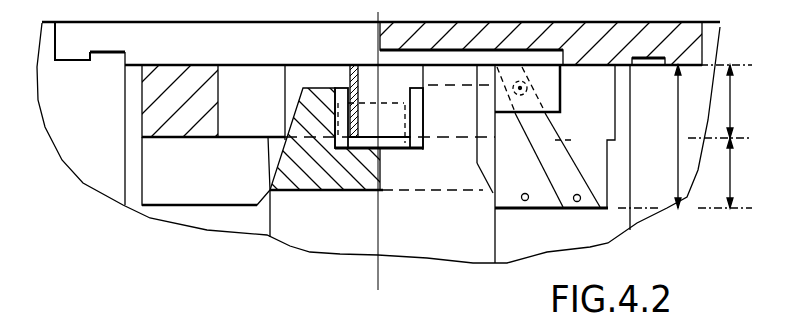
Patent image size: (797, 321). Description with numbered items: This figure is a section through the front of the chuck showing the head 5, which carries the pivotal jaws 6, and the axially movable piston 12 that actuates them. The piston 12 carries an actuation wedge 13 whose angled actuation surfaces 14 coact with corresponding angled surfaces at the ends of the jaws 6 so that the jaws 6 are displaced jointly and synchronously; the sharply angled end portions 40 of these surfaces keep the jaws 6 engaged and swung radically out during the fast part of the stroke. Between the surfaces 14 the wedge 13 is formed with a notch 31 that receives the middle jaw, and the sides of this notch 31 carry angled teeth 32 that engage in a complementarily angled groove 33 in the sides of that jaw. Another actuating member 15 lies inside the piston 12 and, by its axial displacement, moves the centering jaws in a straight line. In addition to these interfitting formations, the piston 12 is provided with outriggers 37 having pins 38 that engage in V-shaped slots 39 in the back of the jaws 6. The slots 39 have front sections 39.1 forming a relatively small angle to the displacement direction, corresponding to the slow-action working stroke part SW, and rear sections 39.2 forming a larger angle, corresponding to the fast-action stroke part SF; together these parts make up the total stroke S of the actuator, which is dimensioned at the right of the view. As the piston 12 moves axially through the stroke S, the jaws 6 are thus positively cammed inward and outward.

The head 5 is at (712, 53).
The jaws 6 is at (168, 105).
The piston 12 is at (382, 164).
The actuation wedge 13 is at (300, 183).
The actuation surfaces 14 is at (266, 173).
The actuating member 15 is at (345, 148).
The notch 31 is at (395, 150).
The angled teeth 32 is at (375, 150).
The angled groove 33 is at (338, 105).
The outriggers 37 is at (545, 200).
The pins 38 is at (537, 90).
The V-shaped slots 39 is at (540, 126).
The front sections 39.1 is at (581, 122).
The rear sections 39.2 is at (550, 175).
The sharply angled end portions 40 is at (298, 108).
The stroke S is at (677, 113).
The slow-action working stroke part SW is at (733, 100).
The fast-action stroke part SF is at (732, 170).